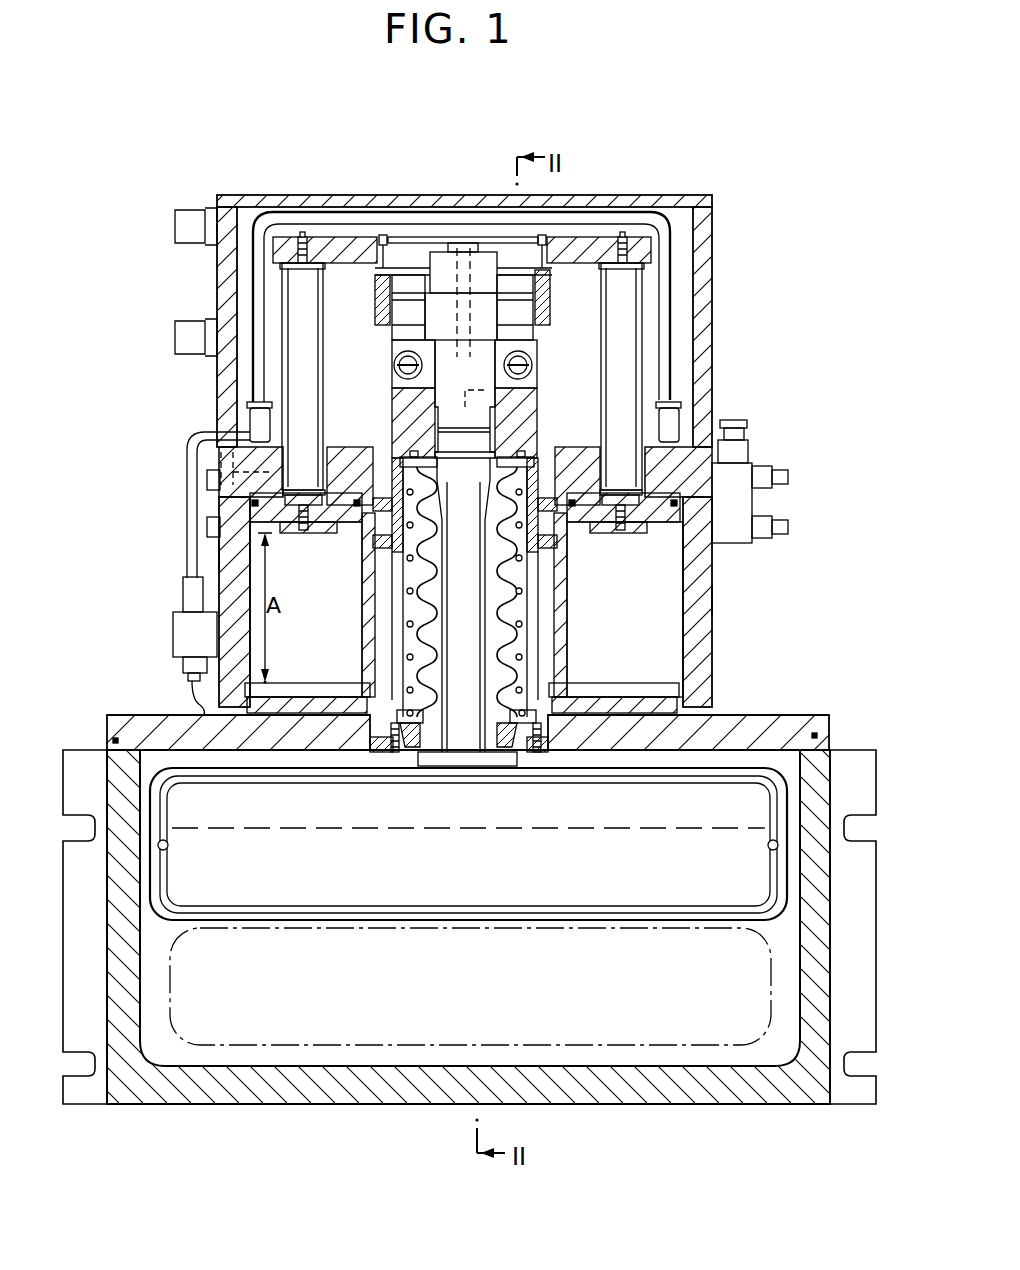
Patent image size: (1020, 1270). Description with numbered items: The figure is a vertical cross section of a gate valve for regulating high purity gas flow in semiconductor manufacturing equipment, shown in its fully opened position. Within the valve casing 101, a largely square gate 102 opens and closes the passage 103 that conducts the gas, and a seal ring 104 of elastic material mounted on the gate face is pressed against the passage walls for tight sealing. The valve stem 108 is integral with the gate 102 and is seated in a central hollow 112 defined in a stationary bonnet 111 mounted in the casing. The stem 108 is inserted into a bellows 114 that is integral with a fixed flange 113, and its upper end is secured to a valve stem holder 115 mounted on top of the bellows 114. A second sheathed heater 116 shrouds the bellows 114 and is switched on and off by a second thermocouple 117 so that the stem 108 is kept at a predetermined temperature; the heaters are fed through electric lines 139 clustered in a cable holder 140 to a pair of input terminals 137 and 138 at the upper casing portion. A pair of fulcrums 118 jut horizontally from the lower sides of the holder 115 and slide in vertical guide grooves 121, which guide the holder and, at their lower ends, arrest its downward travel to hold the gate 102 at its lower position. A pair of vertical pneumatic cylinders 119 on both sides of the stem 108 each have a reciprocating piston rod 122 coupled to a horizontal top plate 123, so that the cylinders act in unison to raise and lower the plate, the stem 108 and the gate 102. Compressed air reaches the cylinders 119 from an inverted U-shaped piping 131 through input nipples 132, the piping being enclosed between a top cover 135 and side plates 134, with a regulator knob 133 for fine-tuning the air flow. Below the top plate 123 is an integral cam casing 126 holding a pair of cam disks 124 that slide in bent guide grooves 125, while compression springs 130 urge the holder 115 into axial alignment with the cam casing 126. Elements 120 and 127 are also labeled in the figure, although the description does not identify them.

The valve casing 101 is at (240, 1092).
The gate 102 is at (633, 890).
The passage 103 is at (703, 1046).
The seal ring 104 is at (707, 903).
The valve stem 108 is at (457, 742).
The stationary bonnet 111 is at (750, 723).
The central hollow 112 is at (530, 735).
The fixed flange 113 is at (427, 757).
The bellows 114 is at (423, 600).
The valve stem holder 115 is at (523, 407).
The second sheathed heater 116 is at (523, 622).
The second thermocouple 117 is at (540, 570).
The fulcrums 118 is at (378, 560).
The pneumatic cylinders 119 is at (198, 553).
The housing wall 120 is at (233, 590).
The guide grooves 121 is at (552, 660).
The piston rod 122 is at (298, 375).
The top plate 123 is at (587, 243).
The cam disks 124 is at (403, 342).
The bent guide grooves 125 is at (544, 298).
The cam casing 126 is at (530, 315).
The clamp block 127 is at (432, 317).
The compression springs 130 is at (395, 365).
The inverted U-shaped piping 131 is at (478, 197).
The input nipples 132 is at (252, 422).
The regulator knob 133 is at (743, 478).
The side plates 134 is at (700, 228).
The top cover 135 is at (420, 197).
The input terminal 137 is at (176, 226).
The input terminal 138 is at (177, 338).
The electric lines 139 is at (188, 480).
The cable holder 140 is at (178, 632).